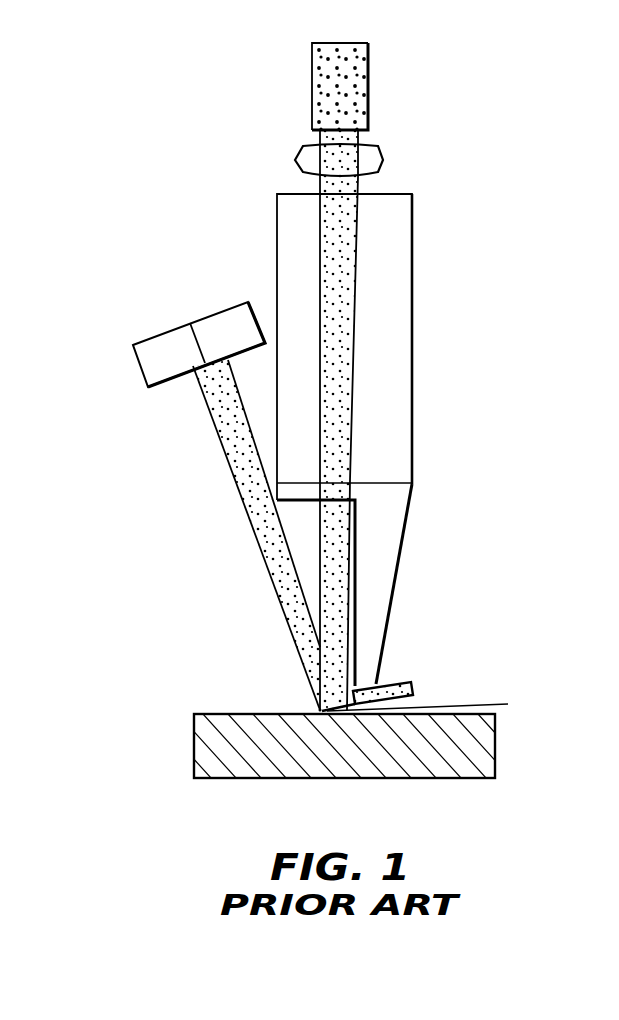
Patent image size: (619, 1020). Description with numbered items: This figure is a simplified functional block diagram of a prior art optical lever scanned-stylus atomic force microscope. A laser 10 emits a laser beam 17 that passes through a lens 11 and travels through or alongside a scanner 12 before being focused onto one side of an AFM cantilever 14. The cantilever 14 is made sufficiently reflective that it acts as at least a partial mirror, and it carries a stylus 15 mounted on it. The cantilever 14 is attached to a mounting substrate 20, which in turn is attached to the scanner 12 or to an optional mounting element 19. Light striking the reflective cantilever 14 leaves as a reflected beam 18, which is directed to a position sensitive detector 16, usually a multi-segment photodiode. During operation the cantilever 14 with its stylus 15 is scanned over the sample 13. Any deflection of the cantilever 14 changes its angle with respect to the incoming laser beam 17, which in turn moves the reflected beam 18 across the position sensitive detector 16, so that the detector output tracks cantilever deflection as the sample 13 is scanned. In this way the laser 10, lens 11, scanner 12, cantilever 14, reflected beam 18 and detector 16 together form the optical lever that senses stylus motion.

The laser 10 is at (312, 92).
The lens 11 is at (298, 157).
The scanner 12 is at (412, 258).
The sample 13 is at (195, 740).
The AFM cantilever 14 is at (431, 707).
The stylus 15 is at (317, 709).
The position sensitive detector 16 is at (189, 322).
The laser beam 17 is at (350, 436).
The reflected beam 18 is at (243, 502).
The mounting element 19 is at (391, 600).
The mounting substrate 20 is at (412, 683).